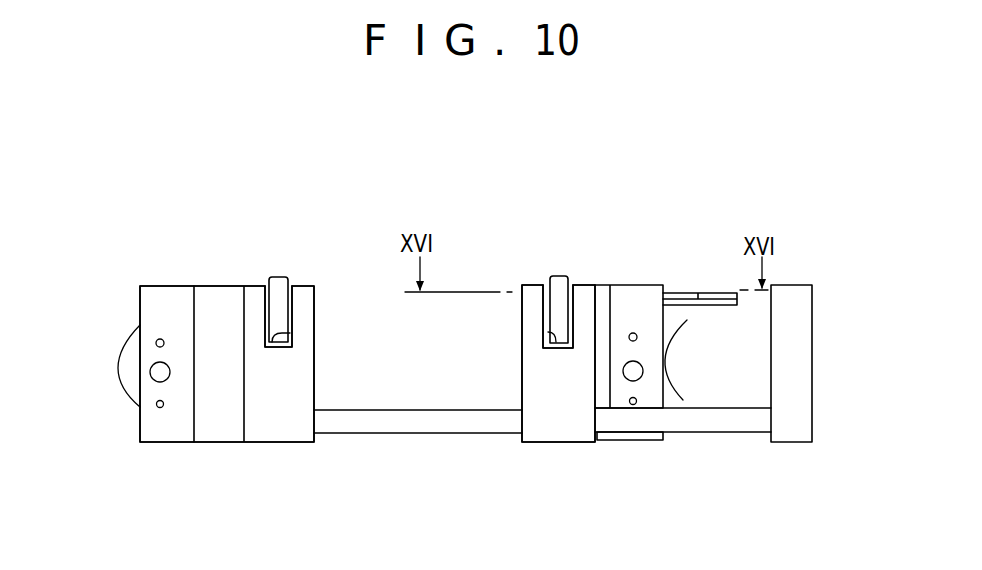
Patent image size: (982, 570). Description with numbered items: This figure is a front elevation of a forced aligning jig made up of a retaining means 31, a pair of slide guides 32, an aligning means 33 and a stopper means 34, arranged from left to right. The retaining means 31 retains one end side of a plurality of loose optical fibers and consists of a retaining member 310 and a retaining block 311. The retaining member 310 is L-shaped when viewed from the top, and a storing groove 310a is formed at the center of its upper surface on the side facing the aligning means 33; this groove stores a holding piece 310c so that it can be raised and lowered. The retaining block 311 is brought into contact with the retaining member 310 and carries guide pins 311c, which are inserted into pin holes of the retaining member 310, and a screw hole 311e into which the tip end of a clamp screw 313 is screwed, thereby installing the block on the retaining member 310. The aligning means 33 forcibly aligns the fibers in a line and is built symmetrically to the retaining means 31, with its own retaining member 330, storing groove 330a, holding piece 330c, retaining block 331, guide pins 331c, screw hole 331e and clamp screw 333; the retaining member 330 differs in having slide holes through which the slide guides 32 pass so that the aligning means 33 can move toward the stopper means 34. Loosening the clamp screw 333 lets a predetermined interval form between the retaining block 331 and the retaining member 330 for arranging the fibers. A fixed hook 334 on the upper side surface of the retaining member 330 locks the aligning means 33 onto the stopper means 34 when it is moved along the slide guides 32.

The retaining means 31 is at (285, 222).
The retaining block 311 is at (167, 281).
The retaining member 310 is at (251, 281).
The holding piece 310c is at (276, 289).
The storing groove 310a is at (290, 333).
The guide pins 311c is at (157, 340).
The screw hole 311e is at (153, 380).
The clamp screw 313 is at (128, 383).
The slide guides 32 is at (410, 423).
The aligning means 33 is at (717, 204).
The retaining member 330 is at (583, 280).
The holding piece 330c is at (557, 280).
The storing groove 330a is at (548, 332).
The retaining block 331 is at (632, 281).
The guide pins 331c is at (637, 335).
The screw hole 331e is at (641, 372).
The clamp screw 333 is at (670, 352).
The fixed hook 334 is at (708, 292).
The stopper means 34 is at (795, 303).